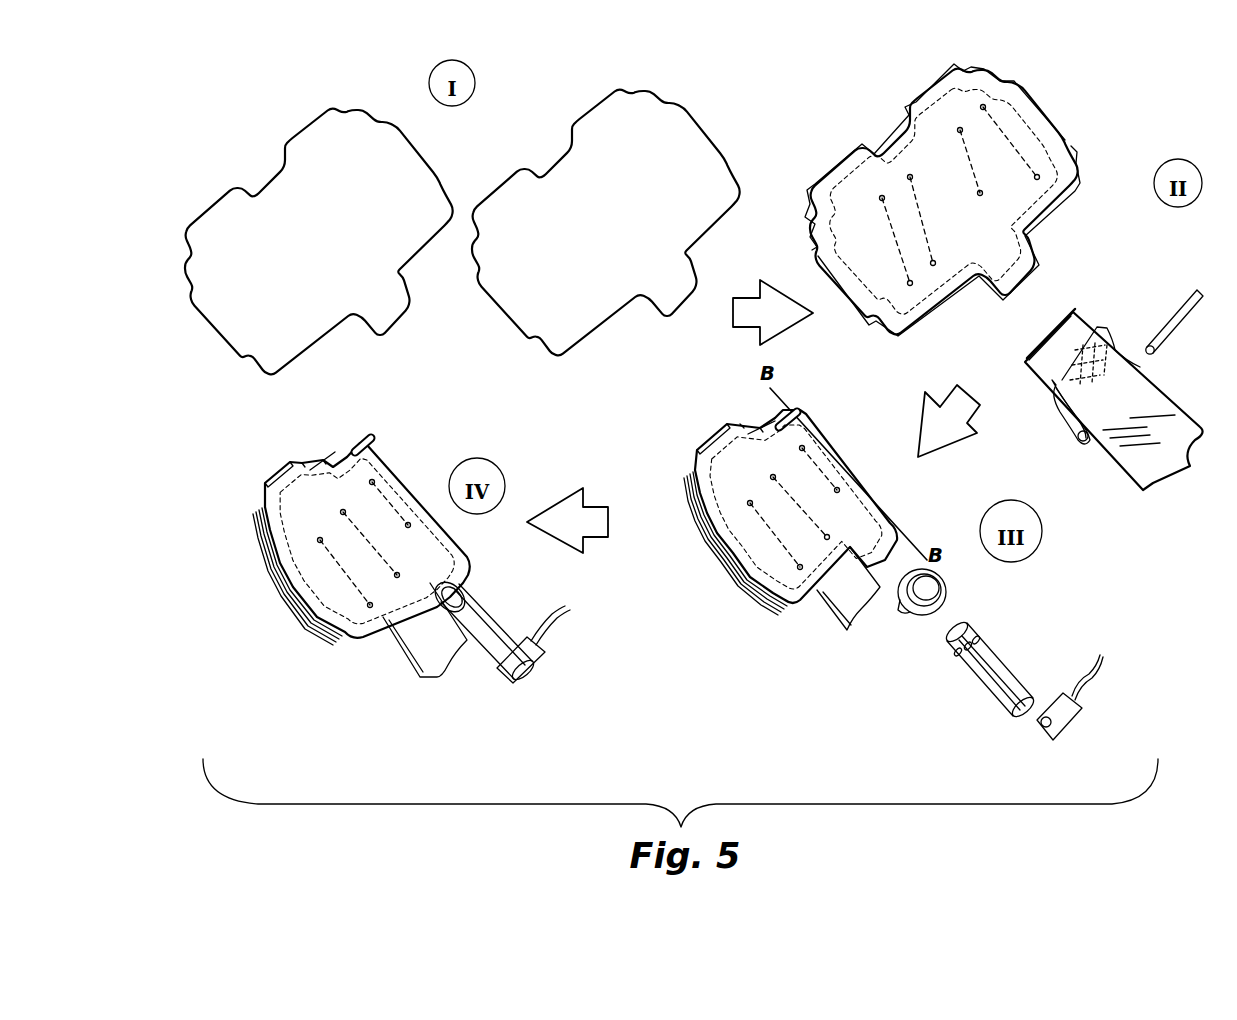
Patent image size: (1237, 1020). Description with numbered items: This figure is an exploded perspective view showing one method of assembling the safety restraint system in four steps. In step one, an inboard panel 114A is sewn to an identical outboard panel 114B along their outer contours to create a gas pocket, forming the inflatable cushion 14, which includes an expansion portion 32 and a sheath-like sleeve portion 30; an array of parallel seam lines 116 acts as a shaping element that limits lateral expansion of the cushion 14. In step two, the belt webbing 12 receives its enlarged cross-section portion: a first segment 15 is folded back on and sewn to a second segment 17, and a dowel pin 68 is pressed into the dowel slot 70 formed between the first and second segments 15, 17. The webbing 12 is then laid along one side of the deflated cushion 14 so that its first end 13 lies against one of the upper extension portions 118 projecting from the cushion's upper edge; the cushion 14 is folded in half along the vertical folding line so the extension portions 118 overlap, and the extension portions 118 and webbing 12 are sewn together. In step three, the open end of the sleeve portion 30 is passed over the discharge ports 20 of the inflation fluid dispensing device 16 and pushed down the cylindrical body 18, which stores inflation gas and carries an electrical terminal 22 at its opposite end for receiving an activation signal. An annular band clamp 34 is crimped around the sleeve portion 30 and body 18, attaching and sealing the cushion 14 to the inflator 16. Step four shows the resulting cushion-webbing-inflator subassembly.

The inboard panel 114A is at (280, 176).
The outboard panel 114B is at (566, 157).
The upper extension portion 118 is at (847, 187).
The inflatable cushion 14 is at (957, 62).
The expansion portion 32 is at (1006, 80).
The parallel seam lines 116 is at (940, 183).
The sleeve portion 30 is at (1037, 250).
The belt webbing 12 is at (1170, 397).
The first end 13 is at (1065, 320).
The second segment 17 is at (1117, 333).
The first segment 15 is at (1058, 410).
The dowel slot 70 is at (1083, 440).
The dowel pin 68 is at (1193, 292).
The annular band clamp 34 is at (923, 617).
The cylindrical body 18 is at (1007, 667).
The discharge ports 20 is at (977, 630).
The inflation fluid dispensing device 16 is at (972, 683).
The electrical terminal 22 is at (1072, 717).